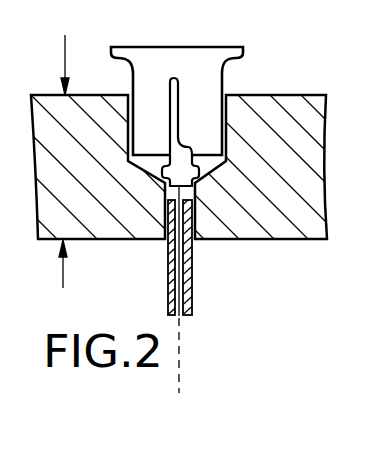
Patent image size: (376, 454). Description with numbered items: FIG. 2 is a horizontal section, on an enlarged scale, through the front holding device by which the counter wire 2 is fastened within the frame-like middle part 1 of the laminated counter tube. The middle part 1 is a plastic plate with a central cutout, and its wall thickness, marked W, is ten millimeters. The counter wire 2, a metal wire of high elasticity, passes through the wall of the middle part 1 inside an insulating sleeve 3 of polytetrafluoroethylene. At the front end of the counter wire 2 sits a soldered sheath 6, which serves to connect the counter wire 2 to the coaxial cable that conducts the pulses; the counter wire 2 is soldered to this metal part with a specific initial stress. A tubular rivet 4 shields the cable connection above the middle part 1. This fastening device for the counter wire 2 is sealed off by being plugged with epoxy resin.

The frame-like middle part 1 is at (247, 243).
The counter wire 2 is at (180, 332).
The insulating sleeve 3 is at (168, 270).
The tubular rivet 4 is at (221, 85).
The soldered sheath 6 is at (170, 76).